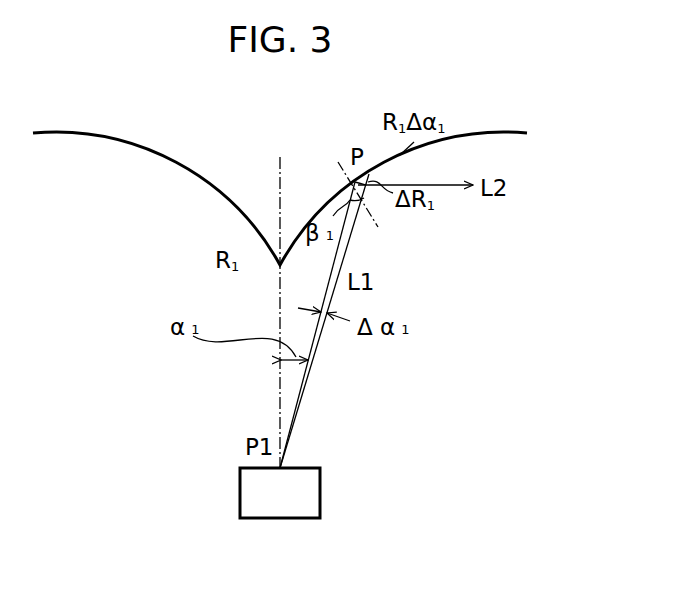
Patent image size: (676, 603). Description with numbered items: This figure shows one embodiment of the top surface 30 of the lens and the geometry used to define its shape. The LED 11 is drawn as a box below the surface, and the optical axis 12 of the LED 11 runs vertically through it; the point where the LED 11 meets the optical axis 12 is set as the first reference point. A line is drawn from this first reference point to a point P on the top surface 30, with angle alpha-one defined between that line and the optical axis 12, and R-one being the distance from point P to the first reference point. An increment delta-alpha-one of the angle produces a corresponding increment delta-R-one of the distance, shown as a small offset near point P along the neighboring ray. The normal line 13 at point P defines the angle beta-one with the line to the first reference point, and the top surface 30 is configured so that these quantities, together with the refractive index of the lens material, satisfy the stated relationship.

The LED 11 is at (283, 502).
The optical axis 12 is at (280, 172).
The normal line 13 is at (378, 222).
The top surface 30 is at (325, 205).